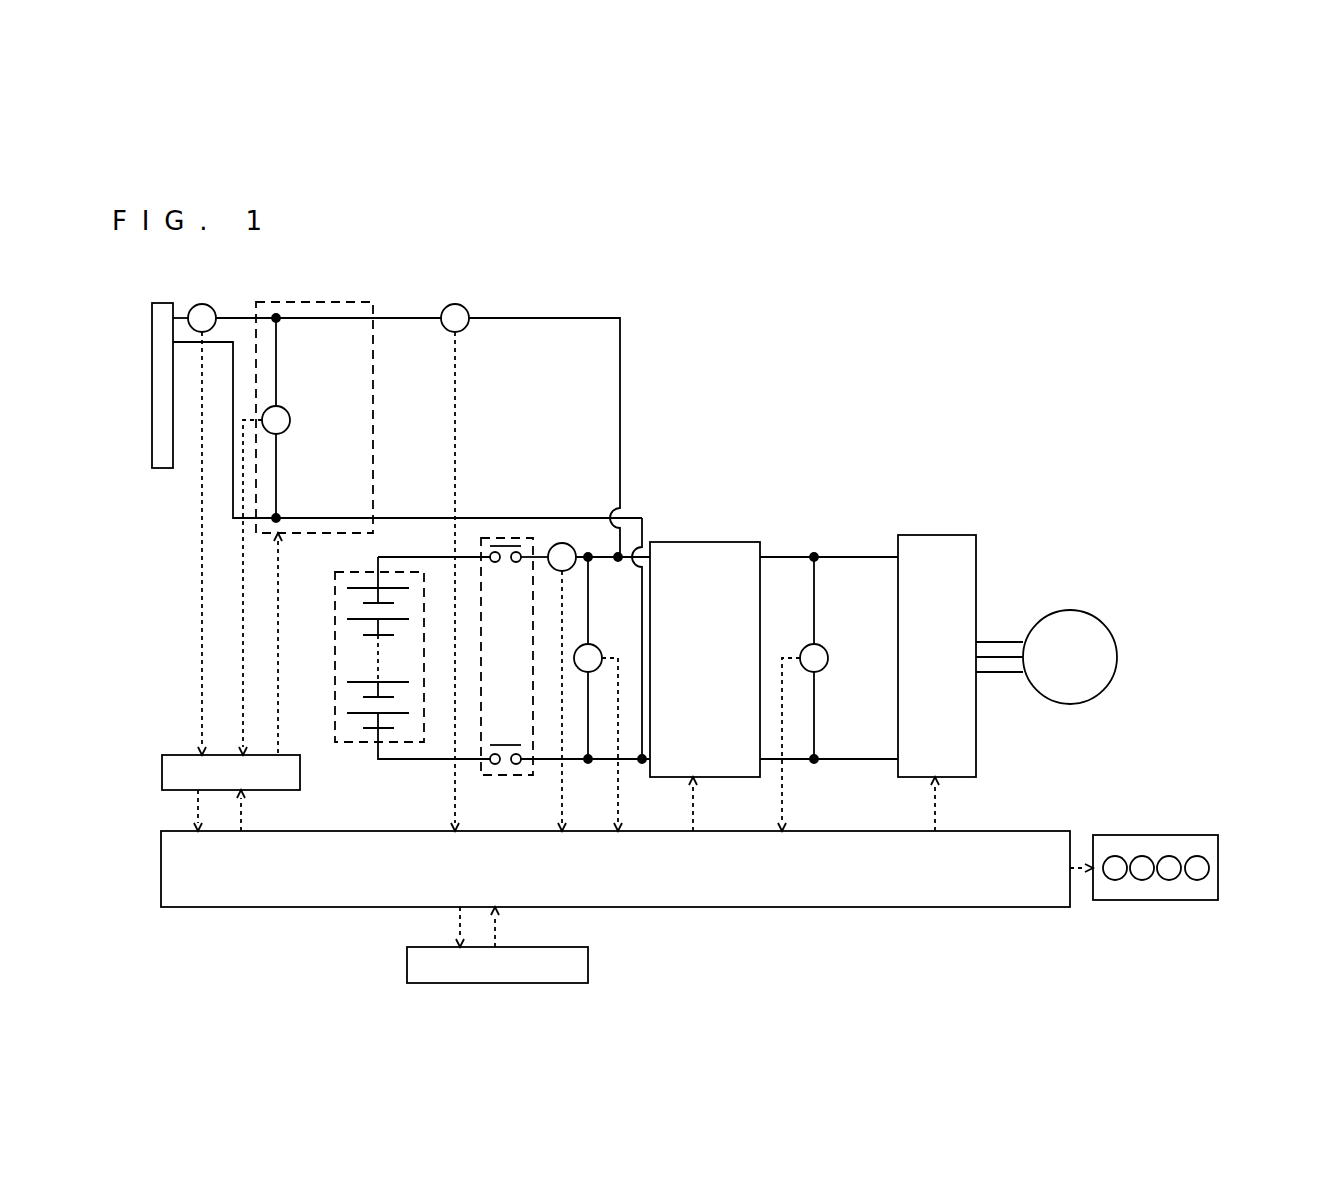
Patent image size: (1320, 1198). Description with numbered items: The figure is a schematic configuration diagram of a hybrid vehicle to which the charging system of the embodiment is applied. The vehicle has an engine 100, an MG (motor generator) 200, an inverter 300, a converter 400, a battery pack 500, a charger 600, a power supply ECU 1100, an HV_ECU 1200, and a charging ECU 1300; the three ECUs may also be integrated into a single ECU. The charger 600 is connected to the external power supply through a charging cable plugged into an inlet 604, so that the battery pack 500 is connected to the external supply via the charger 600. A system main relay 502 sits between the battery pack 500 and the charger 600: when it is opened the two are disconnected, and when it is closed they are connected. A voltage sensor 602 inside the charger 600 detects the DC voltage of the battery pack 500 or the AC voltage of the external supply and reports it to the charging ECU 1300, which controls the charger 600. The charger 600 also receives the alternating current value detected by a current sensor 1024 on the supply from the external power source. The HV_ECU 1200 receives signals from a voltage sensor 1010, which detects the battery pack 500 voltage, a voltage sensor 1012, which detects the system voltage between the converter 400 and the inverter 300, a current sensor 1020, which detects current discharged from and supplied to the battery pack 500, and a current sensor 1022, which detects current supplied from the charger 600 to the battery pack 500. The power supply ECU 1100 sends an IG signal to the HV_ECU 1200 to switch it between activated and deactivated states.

The engine 100 is at (1218, 868).
The motor generator 200 is at (1113, 628).
The inverter 300 is at (976, 562).
The converter 400 is at (684, 777).
The battery pack 500 is at (363, 743).
The system main relay 502 is at (500, 538).
The charger 600 is at (335, 302).
The voltage sensor 602 is at (285, 410).
The inlet 604 is at (165, 303).
The voltage sensor 1010 is at (595, 645).
The voltage sensor 1012 is at (820, 645).
The current sensor 1020 is at (568, 543).
The current sensor 1022 is at (465, 330).
The current sensor 1024 is at (207, 304).
The power supply ECU 1100 is at (588, 965).
The HV_ECU 1200 is at (708, 907).
The charging ECU 1300 is at (182, 755).